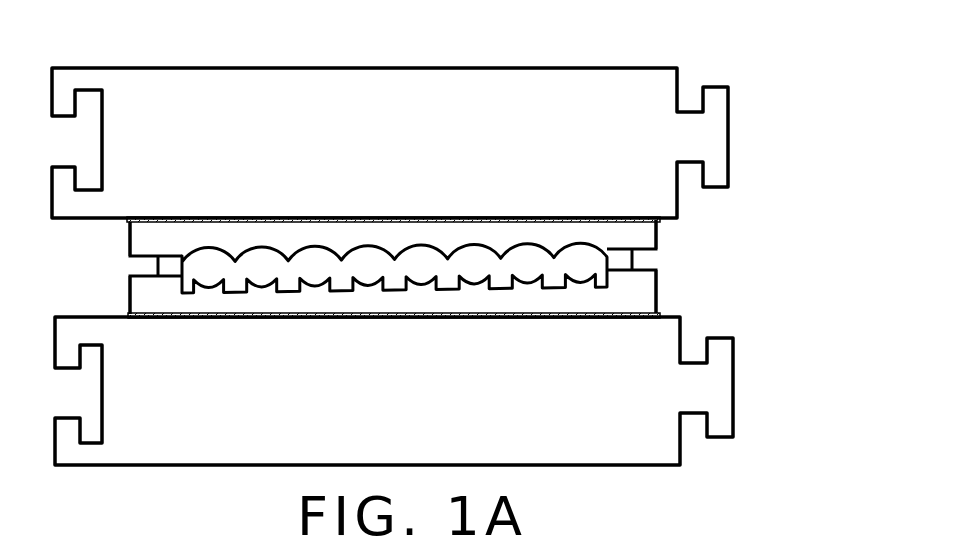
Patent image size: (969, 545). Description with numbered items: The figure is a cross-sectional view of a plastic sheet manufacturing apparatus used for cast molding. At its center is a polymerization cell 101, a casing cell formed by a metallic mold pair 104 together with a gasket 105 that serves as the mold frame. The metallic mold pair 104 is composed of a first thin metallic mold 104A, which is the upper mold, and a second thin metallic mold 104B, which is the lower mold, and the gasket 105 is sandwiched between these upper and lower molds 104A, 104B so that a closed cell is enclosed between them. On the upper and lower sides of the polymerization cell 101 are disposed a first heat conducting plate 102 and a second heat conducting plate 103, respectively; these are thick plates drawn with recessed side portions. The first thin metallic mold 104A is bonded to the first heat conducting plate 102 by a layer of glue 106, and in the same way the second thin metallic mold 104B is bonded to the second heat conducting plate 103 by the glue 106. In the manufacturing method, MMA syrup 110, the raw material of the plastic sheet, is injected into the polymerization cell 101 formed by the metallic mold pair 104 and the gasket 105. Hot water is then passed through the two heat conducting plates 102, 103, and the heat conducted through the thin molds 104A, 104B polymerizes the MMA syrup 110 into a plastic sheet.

The polymerization cell 101 is at (88, 259).
The first heat conducting plate 102 is at (637, 95).
The second heat conducting plate 103 is at (647, 430).
The metallic mold pair 104 is at (477, 267).
The first thin metallic mold 104A is at (635, 242).
The second thin metallic mold 104B is at (635, 287).
The gasket 105 is at (618, 255).
The glue 106 is at (678, 218).
The MMA syrup 110 is at (417, 260).